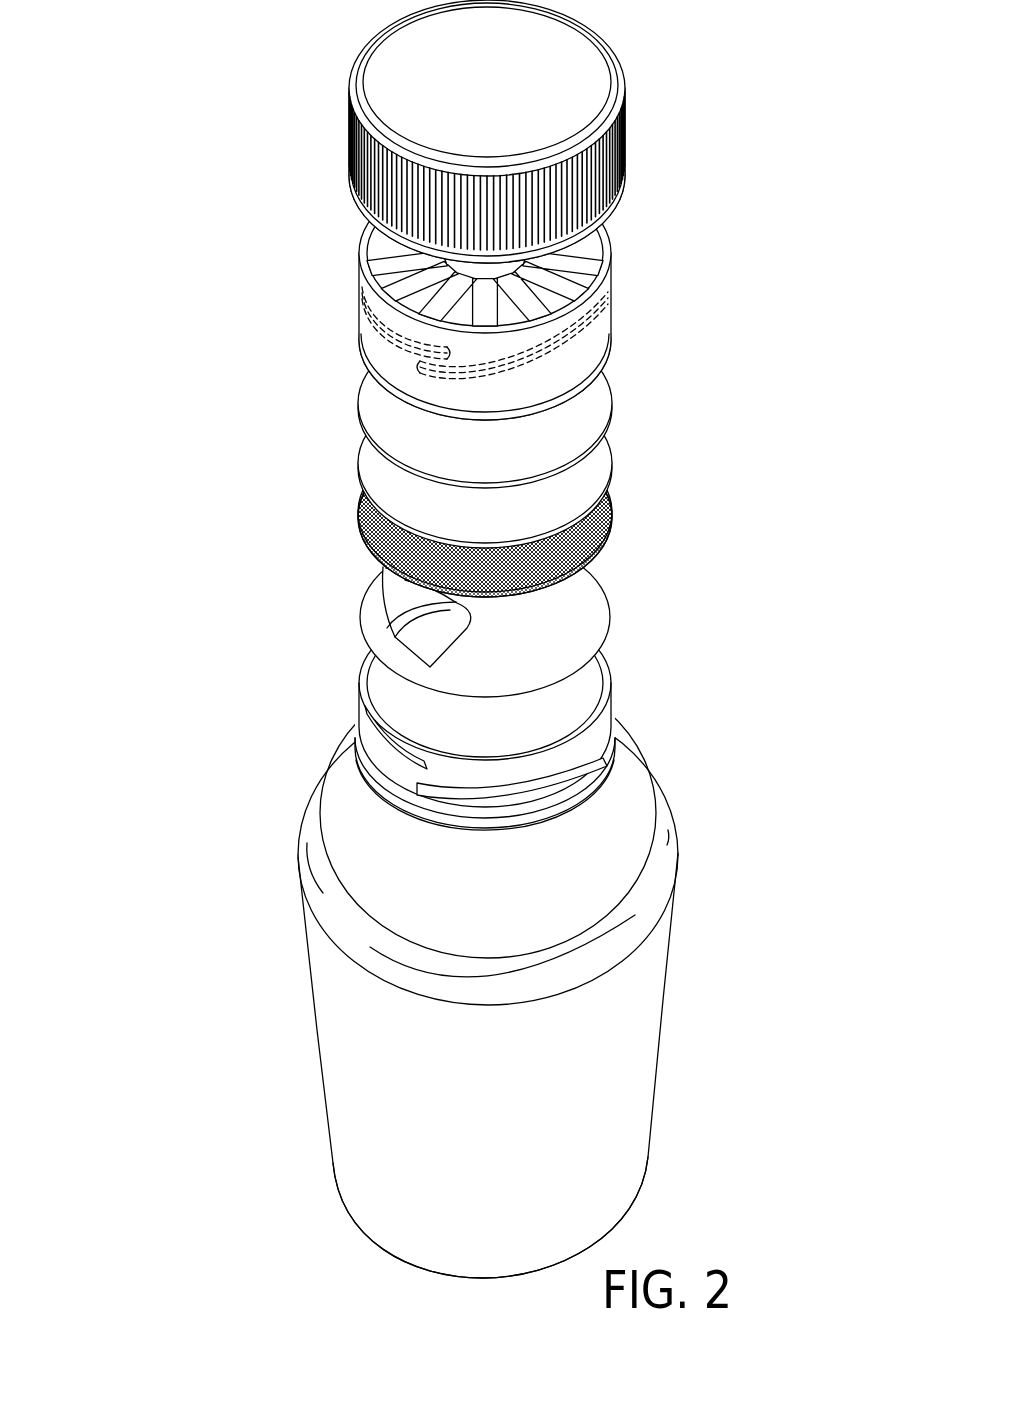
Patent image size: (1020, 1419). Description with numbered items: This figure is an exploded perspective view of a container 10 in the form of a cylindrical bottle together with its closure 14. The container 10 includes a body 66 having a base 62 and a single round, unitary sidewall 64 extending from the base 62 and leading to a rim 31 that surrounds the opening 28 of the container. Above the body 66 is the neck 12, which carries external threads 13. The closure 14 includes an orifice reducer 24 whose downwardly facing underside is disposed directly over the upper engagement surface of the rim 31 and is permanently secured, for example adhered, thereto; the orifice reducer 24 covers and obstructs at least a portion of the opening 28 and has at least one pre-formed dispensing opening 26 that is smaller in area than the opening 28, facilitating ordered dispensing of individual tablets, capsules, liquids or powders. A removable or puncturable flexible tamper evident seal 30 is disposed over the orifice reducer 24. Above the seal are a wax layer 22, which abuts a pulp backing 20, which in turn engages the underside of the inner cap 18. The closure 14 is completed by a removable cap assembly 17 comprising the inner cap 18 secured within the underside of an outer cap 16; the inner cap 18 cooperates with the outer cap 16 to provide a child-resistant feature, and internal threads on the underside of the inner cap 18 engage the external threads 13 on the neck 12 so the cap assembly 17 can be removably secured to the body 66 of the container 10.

The container 10 is at (437, 642).
The neck 12 is at (380, 762).
The external threads 13 is at (572, 772).
The closure 14 is at (470, 348).
The outer cap 16 is at (446, 131).
The cap assembly 17 is at (395, 210).
The inner cap 18 is at (372, 331).
The pulp backing 20 is at (403, 419).
The wax layer 22 is at (388, 493).
The orifice reducer 24 is at (418, 617).
The dispensing opening 26 is at (410, 600).
The opening 28 is at (567, 693).
The tamper evident seal 30 is at (400, 547).
The rim 31 is at (474, 724).
The base 62 is at (390, 1253).
The sidewall 64 is at (593, 1020).
The body 66 is at (456, 945).